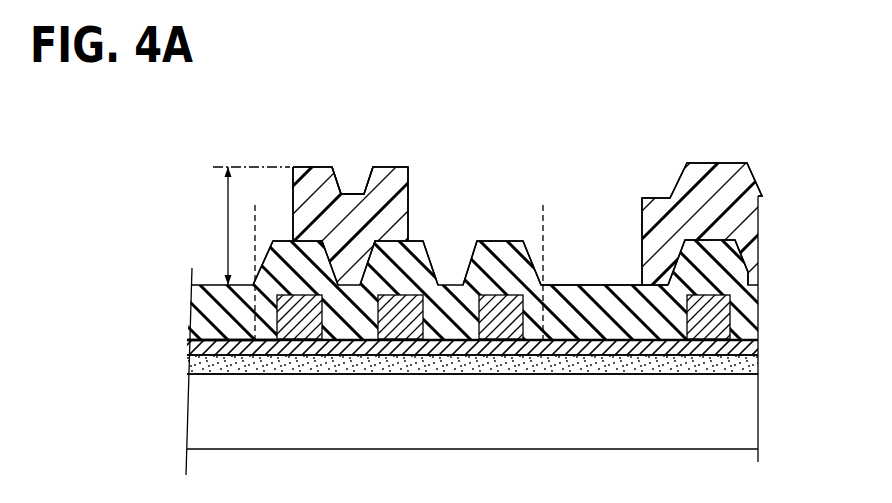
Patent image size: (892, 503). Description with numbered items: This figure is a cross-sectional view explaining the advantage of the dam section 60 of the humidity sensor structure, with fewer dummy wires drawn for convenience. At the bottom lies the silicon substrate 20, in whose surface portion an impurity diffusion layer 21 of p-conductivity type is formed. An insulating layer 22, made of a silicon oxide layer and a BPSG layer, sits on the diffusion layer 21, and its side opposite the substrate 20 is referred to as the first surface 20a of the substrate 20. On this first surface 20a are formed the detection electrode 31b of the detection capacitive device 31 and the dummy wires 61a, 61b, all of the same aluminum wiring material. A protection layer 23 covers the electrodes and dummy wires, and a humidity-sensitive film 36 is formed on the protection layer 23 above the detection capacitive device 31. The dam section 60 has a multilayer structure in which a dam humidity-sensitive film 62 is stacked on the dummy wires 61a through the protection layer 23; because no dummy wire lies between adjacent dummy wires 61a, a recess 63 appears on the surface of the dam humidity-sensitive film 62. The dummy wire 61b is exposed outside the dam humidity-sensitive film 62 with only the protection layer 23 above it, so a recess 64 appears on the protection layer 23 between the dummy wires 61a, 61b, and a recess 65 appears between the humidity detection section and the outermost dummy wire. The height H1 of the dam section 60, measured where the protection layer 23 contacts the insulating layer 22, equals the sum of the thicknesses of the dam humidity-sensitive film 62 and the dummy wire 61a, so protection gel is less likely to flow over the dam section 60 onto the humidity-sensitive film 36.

The substrate 20 is at (750, 413).
The first surface 20a is at (206, 339).
The impurity diffusion layer 21 is at (750, 365).
The insulating layer 22 is at (750, 347).
The protection layer 23 is at (743, 313).
The detection capacitive device 31 is at (670, 152).
The detection electrode 31b is at (718, 297).
The humidity-sensitive film 36 is at (735, 178).
The dam section 60 is at (275, 147).
The dummy wire 61a is at (302, 327).
The dummy wire 61b is at (503, 327).
The dam humidity-sensitive film 62 is at (312, 180).
The recess 63 is at (342, 180).
The recess 64 is at (466, 258).
The recess 65 is at (575, 283).
The height of the dam section H1 is at (215, 226).